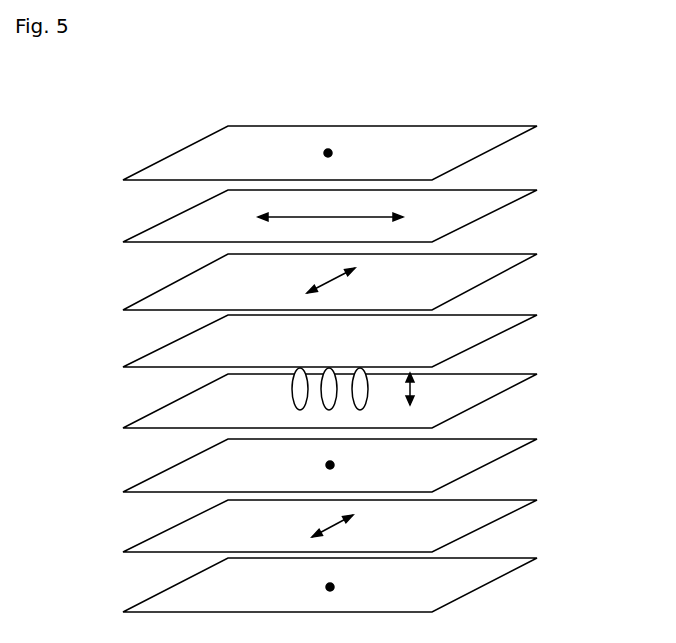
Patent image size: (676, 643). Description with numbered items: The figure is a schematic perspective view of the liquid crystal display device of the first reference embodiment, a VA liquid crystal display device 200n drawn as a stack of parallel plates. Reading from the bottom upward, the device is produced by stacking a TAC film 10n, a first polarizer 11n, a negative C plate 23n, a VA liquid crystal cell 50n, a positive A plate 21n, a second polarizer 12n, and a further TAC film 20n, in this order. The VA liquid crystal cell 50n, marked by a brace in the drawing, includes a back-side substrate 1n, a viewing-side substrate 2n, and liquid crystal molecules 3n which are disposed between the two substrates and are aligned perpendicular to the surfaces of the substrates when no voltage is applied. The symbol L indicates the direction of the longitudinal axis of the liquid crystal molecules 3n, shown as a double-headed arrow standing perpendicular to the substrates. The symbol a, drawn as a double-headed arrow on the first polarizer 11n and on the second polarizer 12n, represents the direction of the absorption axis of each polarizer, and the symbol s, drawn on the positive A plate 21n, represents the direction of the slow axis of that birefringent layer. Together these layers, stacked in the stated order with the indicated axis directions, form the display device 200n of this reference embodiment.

The VA liquid crystal display device 200n is at (598, 93).
The TAC film 20n is at (472, 146).
The second polarizer 12n is at (344, 217).
The positive A plate 21n is at (340, 282).
The viewing-side substrate 2n is at (177, 350).
The liquid crystal molecules 3n is at (294, 388).
The back-side substrate 1n is at (163, 412).
The VA liquid crystal cell 50n is at (340, 370).
The direction of the longitudinal axis of the liquid crystal molecules L is at (415, 387).
The negative C plate 23n is at (473, 460).
The first polarizer 11n is at (312, 537).
The TAC film 10n is at (473, 582).
The direction of the absorption axis of each polarizer a is at (258, 215).
The direction of the slow axis of each birefringent layer s is at (312, 288).